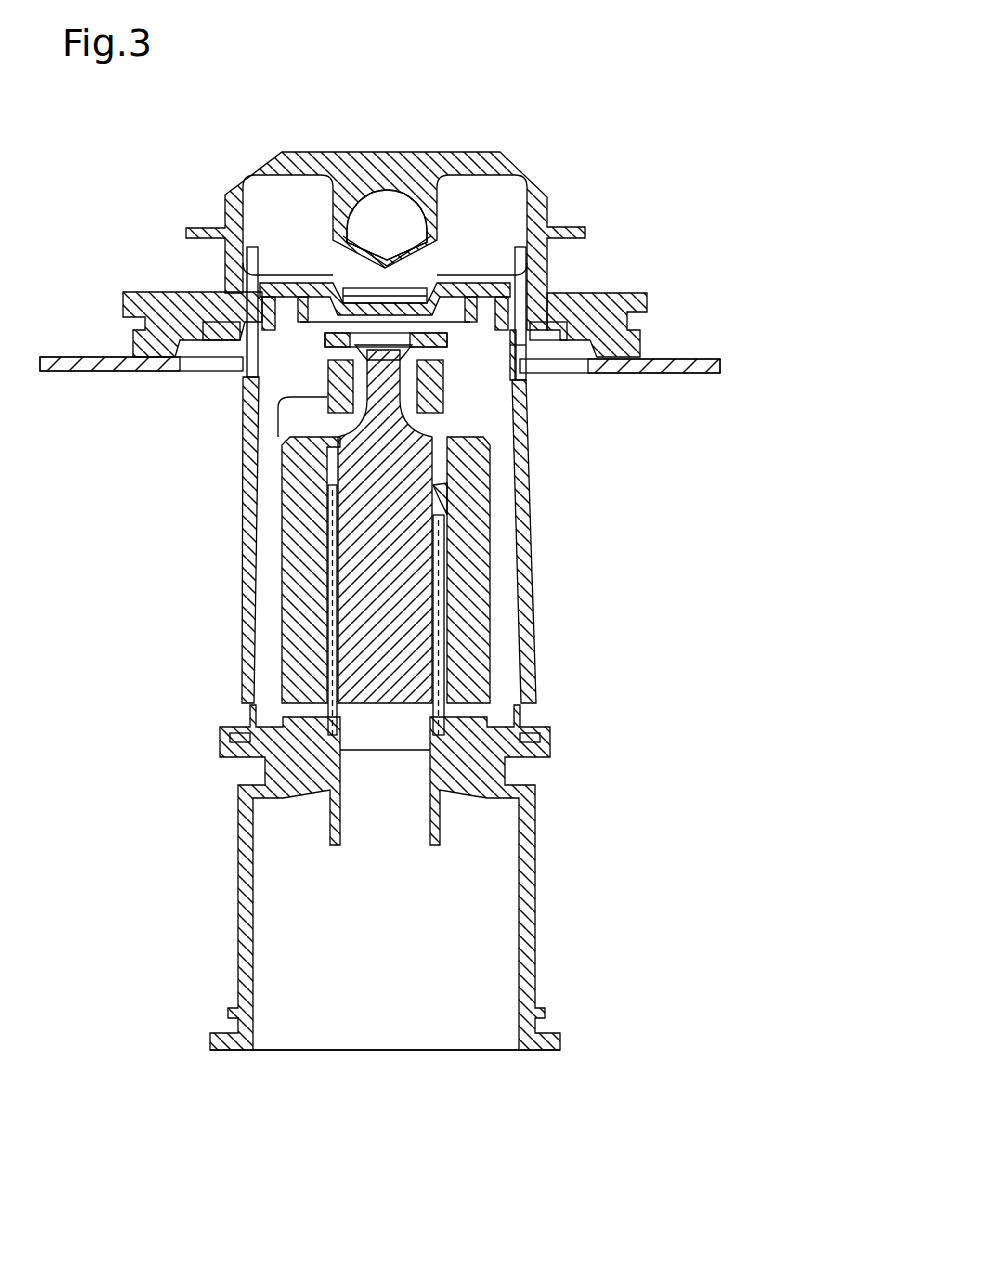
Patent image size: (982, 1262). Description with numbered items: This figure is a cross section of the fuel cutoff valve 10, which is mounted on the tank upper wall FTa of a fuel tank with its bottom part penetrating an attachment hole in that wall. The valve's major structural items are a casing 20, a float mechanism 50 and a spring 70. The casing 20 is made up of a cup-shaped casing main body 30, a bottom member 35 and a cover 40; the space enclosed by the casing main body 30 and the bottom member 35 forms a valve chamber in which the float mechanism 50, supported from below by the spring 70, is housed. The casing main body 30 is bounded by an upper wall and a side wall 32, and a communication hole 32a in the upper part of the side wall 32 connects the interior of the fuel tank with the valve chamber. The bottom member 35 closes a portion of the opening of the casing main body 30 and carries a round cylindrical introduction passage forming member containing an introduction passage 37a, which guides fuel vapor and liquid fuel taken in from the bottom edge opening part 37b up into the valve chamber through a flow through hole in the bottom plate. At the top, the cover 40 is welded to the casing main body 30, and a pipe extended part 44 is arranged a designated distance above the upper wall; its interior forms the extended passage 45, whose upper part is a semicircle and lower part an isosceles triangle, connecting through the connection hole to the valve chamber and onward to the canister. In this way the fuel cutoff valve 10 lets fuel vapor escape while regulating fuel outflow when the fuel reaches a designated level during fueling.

The fuel cutoff valve 10 is at (560, 175).
The casing 20 is at (148, 530).
The casing main body 30 is at (240, 572).
The side wall 32 is at (533, 452).
The communication hole 32a is at (518, 362).
The bottom member 35 is at (205, 738).
The introduction passage 37a is at (402, 940).
The bottom edge opening part 37b is at (420, 1051).
The cover 40 is at (200, 322).
The pipe extended part 44 is at (336, 238).
The extended passage 45 is at (407, 240).
The float mechanism 50 is at (497, 528).
The spring 70 is at (435, 686).
The tank upper wall FTa is at (693, 358).